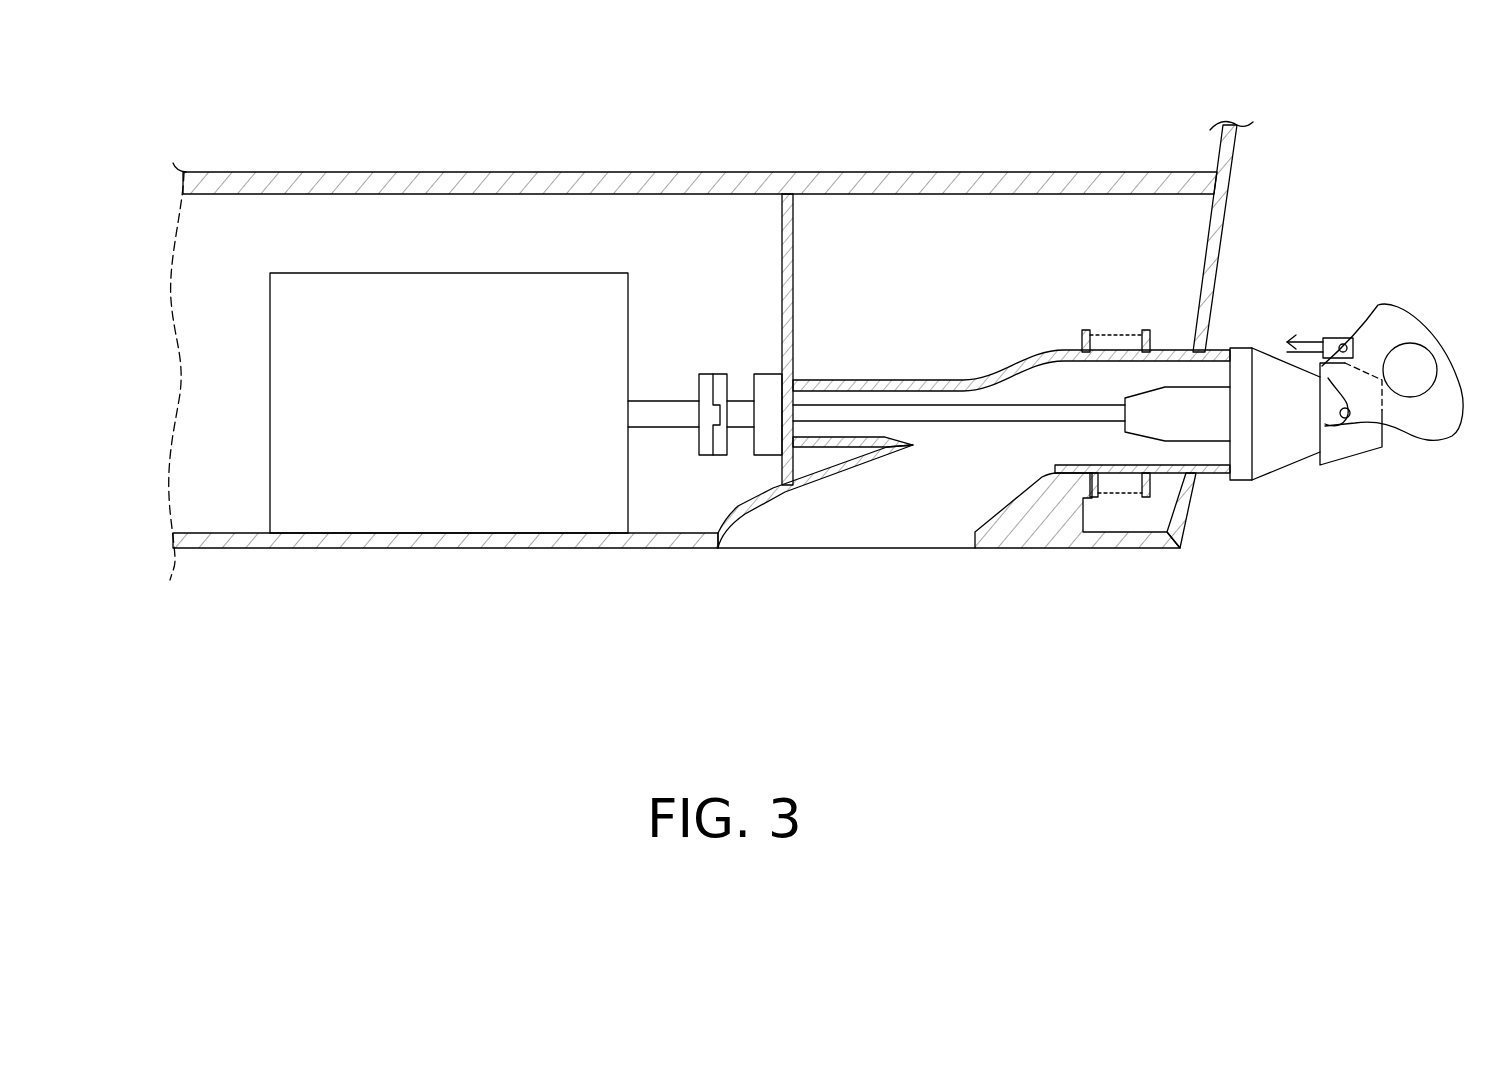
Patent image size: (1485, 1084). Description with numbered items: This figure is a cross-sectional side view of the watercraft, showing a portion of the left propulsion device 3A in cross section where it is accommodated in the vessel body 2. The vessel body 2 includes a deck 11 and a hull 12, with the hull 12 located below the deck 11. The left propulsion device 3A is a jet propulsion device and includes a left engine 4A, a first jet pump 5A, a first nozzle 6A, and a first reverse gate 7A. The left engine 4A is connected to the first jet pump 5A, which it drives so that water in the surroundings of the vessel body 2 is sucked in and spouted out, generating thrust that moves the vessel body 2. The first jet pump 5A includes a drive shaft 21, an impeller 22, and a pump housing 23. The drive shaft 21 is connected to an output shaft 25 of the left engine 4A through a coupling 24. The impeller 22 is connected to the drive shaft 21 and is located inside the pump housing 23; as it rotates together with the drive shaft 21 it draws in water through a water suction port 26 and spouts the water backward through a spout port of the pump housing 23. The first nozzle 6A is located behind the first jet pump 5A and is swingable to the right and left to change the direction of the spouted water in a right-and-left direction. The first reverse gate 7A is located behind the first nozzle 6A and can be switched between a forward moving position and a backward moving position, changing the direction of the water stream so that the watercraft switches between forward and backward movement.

The vessel body 2 is at (711, 333).
The deck 11 is at (560, 170).
The hull 12 is at (304, 548).
The left propulsion device 3A is at (445, 446).
The left engine 4A is at (447, 500).
The output shaft 25 is at (660, 428).
The coupling 24 is at (709, 456).
The pump housing 23 is at (1032, 378).
The drive shaft 21 is at (935, 404).
The impeller 22 is at (1207, 431).
The water suction port 26 is at (893, 549).
The first jet pump 5A is at (1137, 310).
The first nozzle 6A is at (1362, 441).
The first reverse gate 7A is at (1373, 330).